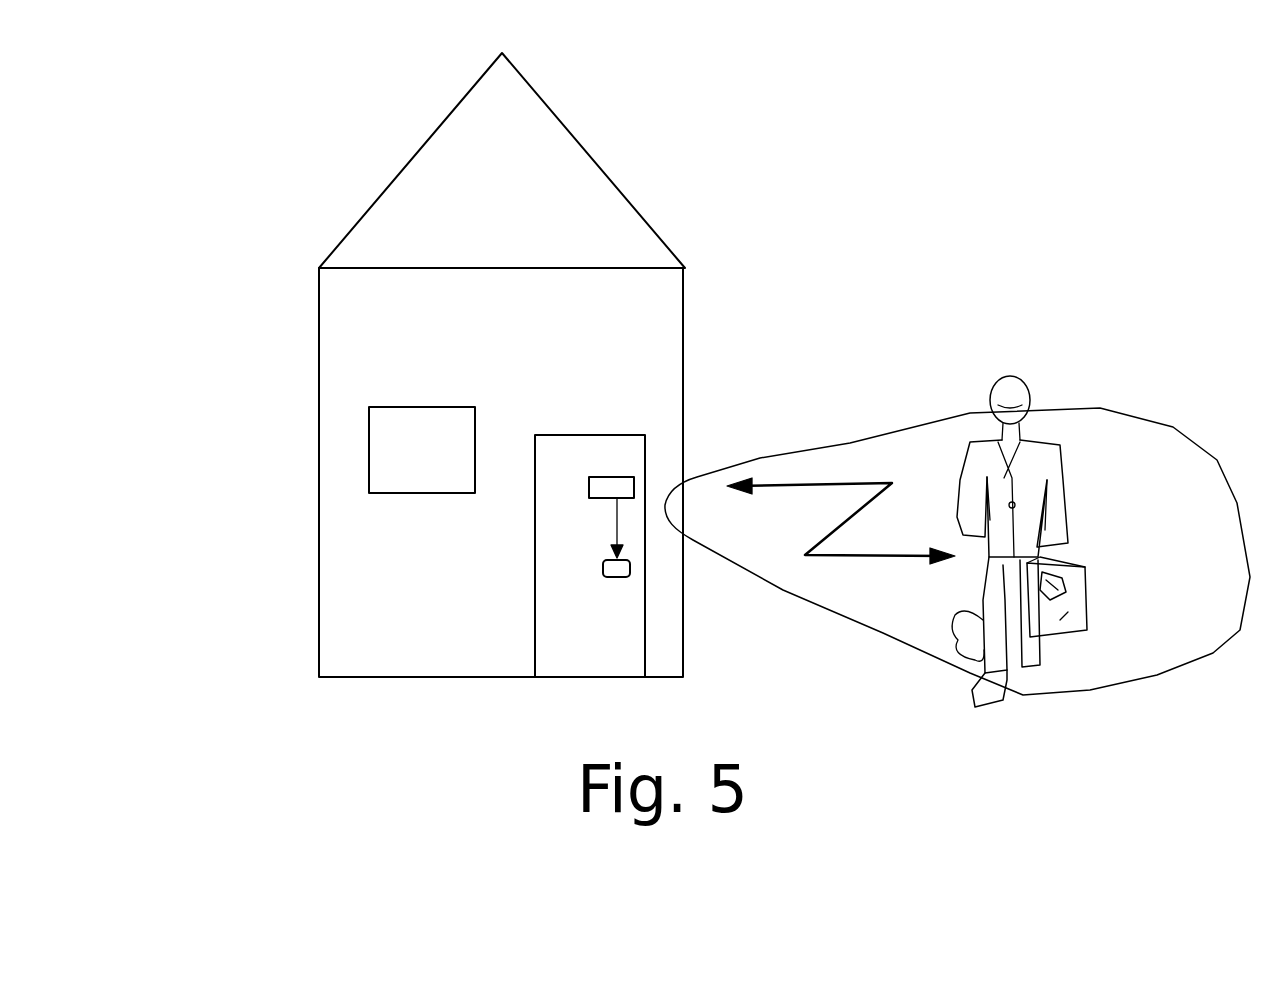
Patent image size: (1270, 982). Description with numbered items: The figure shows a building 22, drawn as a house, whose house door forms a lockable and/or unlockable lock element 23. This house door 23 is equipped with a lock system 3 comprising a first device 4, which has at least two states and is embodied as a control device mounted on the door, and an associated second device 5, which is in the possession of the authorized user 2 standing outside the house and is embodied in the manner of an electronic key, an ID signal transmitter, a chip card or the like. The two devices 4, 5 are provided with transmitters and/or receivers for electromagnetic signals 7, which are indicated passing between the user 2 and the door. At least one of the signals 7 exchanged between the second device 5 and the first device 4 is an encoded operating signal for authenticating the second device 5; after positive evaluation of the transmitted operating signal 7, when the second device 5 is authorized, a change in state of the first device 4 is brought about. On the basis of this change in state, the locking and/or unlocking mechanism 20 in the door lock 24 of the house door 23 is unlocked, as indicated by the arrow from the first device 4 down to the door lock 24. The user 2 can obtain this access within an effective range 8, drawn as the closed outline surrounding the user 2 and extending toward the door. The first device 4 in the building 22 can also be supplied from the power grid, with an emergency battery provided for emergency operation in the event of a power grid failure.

The authorized user 2 is at (1028, 477).
The lock system 3 is at (712, 569).
The first device 4 is at (607, 485).
The second device 5 is at (1053, 573).
The electromagnetic signals 7 is at (838, 479).
The effective range 8 is at (1102, 410).
The locking and/or unlocking mechanism 20 is at (617, 527).
The building 22 is at (420, 225).
The lock element 23 is at (562, 617).
The door lock 24 is at (603, 567).